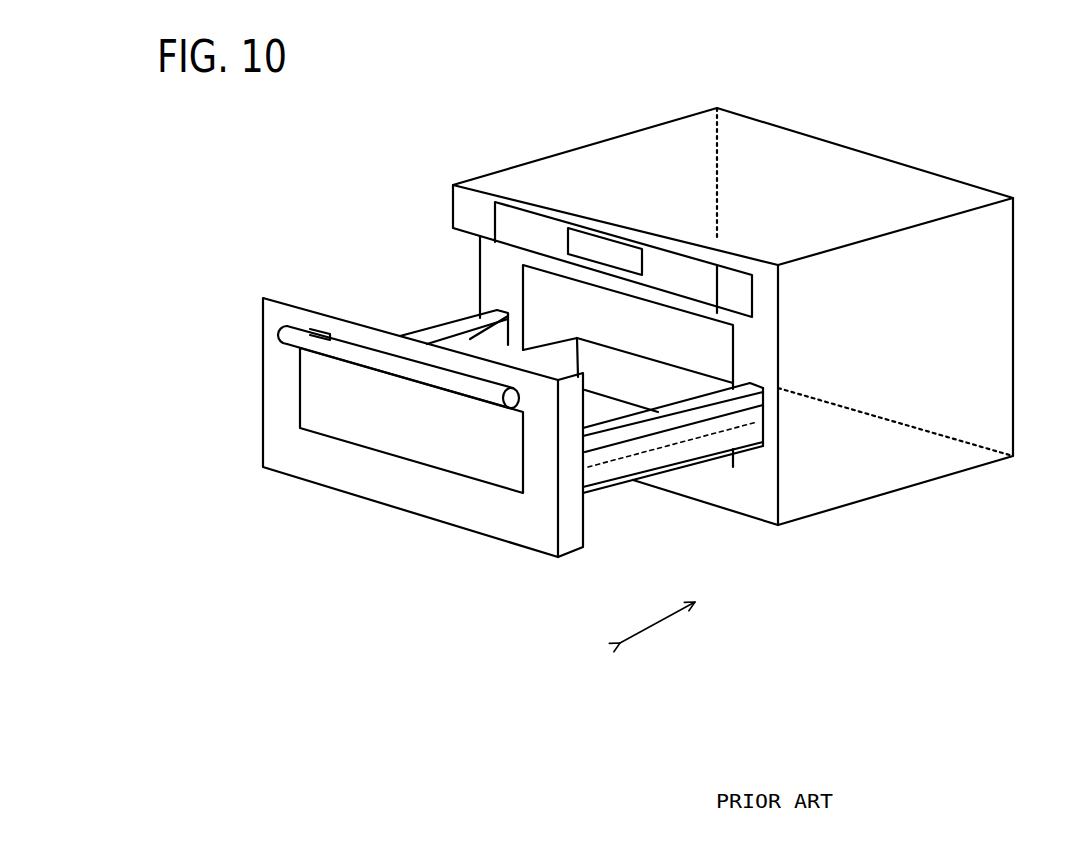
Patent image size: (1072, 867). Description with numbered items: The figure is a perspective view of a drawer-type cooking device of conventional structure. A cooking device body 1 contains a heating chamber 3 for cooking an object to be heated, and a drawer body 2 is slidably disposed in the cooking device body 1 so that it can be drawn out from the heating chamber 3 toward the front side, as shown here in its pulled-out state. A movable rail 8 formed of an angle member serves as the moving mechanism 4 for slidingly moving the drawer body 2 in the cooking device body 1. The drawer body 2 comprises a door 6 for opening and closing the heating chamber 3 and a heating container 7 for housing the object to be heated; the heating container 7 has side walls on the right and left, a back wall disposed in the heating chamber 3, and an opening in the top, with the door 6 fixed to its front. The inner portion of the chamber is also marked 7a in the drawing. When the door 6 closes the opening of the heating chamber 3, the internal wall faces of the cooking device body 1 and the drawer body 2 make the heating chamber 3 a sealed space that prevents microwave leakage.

The cooking device body 1 is at (709, 316).
The drawer body 2 is at (487, 351).
The heating chamber 3 is at (550, 306).
The moving mechanism 4 is at (448, 315).
The door 6 is at (327, 475).
The heating container 7 is at (628, 366).
The chamber bottom ledge 7a is at (553, 357).
The movable rail 8 is at (625, 478).